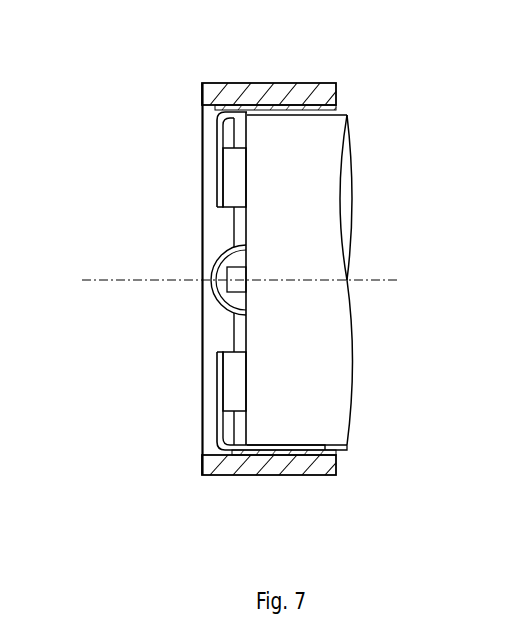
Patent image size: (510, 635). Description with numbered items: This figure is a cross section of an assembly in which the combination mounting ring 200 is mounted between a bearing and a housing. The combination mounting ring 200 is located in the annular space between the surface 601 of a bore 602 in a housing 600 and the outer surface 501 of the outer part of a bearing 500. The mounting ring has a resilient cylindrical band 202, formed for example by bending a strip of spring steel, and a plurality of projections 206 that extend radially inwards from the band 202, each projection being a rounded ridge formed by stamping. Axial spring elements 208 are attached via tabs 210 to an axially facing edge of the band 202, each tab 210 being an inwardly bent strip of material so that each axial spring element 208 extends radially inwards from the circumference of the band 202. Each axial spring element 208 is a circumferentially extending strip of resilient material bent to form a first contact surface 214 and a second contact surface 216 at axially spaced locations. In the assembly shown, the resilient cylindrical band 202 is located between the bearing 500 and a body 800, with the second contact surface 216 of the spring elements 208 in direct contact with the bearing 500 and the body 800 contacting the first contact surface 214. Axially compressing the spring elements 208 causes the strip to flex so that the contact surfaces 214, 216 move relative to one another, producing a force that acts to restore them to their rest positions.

The body 800 is at (214, 258).
The tab 210 is at (203, 110).
The resilient cylindrical band 202 is at (243, 108).
The projection 206 is at (285, 110).
The axial spring element 208 is at (215, 153).
The first contact surface 214 is at (220, 192).
The second contact surface 216 is at (228, 186).
The combination mounting ring 200 is at (219, 428).
The bearing 500 is at (318, 205).
The outer surface 501 is at (343, 117).
The bore 602 is at (341, 445).
The surface of the bore 601 is at (337, 471).
The housing 600 is at (283, 478).